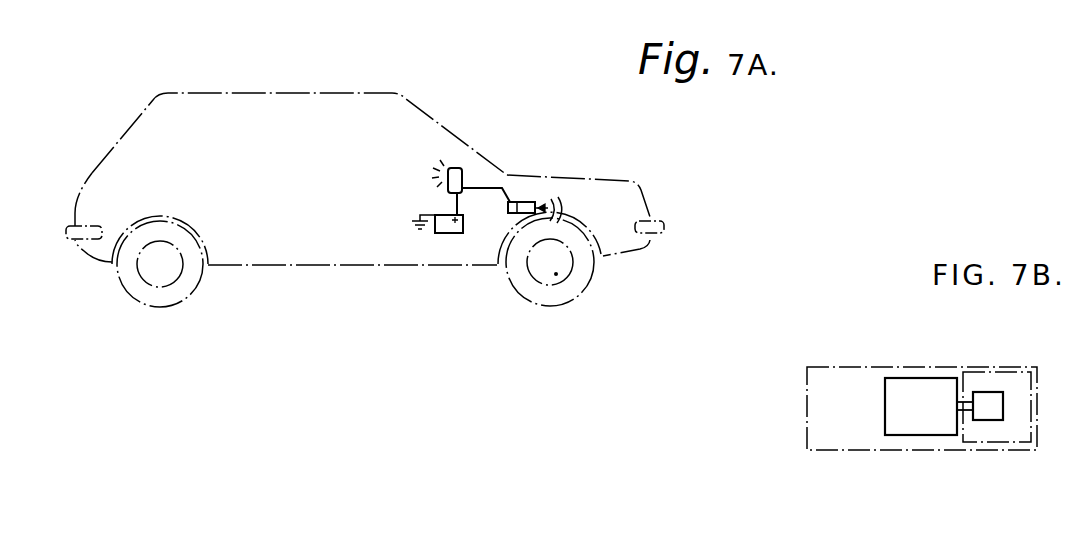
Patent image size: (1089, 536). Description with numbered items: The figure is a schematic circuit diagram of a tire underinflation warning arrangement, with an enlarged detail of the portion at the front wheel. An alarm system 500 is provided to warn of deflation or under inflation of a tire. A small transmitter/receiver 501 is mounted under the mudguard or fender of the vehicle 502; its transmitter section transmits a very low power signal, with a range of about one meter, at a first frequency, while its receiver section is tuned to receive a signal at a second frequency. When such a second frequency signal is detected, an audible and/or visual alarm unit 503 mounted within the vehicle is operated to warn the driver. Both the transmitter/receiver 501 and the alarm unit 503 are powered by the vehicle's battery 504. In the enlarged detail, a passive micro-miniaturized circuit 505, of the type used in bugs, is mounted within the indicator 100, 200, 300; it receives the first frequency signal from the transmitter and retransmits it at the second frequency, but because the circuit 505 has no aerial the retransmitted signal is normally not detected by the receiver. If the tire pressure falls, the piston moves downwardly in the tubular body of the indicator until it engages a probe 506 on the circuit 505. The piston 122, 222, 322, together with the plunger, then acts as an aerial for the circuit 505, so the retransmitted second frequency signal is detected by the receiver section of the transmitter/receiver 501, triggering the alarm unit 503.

In FIG. 7A, the alarm system 500 is at (718, 184).
In FIG. 7A, the transmitter/receiver 501 is at (531, 203).
In FIG. 7A, the vehicle 502 is at (360, 267).
In FIG. 7A, the alarm unit 503 is at (463, 172).
In FIG. 7A, the battery 504 is at (447, 233).
In FIG. 7B, the passive micro-miniaturized circuit 505 is at (1023, 360).
In FIG. 7B, the probe 506 is at (967, 411).
In FIG. 7B, the indicator 100 is at (922, 381).
In FIG. 7B, the indicator 200 is at (922, 381).
In FIG. 7B, the indicator 300 is at (900, 342).
In FIG. 7B, the piston 122 is at (883, 431).
In FIG. 7B, the piston 222 is at (883, 431).
In FIG. 7B, the piston 322 is at (913, 435).